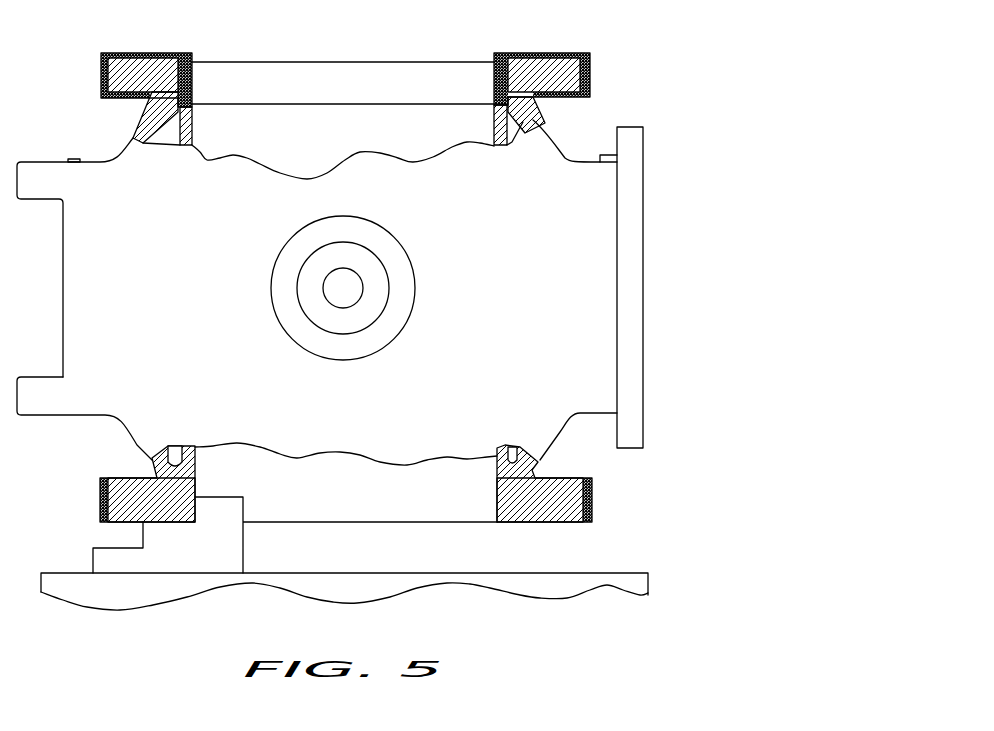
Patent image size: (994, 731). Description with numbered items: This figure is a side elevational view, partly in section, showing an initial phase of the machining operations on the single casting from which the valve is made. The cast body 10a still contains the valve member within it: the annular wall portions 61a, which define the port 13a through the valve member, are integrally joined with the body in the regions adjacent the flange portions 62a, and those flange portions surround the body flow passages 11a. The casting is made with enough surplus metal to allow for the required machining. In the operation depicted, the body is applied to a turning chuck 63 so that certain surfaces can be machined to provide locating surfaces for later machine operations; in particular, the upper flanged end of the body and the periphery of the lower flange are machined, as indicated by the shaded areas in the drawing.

The body 10a is at (543, 160).
The body flow passages 11a is at (356, 78).
The port 13a is at (238, 127).
The annular wall portions 61a is at (498, 118).
The flange portions 62a is at (592, 77).
The turning chuck 63 is at (600, 572).